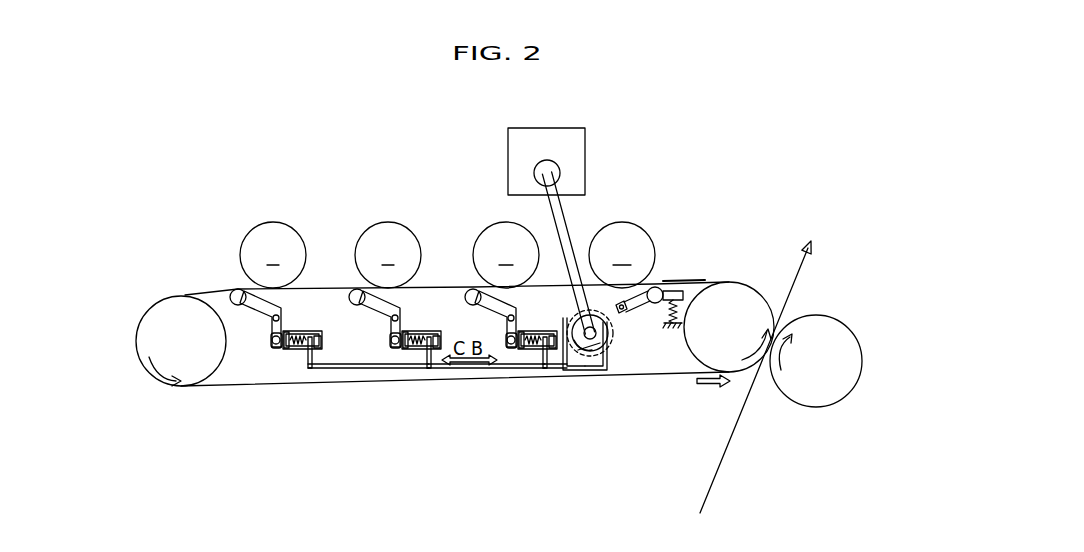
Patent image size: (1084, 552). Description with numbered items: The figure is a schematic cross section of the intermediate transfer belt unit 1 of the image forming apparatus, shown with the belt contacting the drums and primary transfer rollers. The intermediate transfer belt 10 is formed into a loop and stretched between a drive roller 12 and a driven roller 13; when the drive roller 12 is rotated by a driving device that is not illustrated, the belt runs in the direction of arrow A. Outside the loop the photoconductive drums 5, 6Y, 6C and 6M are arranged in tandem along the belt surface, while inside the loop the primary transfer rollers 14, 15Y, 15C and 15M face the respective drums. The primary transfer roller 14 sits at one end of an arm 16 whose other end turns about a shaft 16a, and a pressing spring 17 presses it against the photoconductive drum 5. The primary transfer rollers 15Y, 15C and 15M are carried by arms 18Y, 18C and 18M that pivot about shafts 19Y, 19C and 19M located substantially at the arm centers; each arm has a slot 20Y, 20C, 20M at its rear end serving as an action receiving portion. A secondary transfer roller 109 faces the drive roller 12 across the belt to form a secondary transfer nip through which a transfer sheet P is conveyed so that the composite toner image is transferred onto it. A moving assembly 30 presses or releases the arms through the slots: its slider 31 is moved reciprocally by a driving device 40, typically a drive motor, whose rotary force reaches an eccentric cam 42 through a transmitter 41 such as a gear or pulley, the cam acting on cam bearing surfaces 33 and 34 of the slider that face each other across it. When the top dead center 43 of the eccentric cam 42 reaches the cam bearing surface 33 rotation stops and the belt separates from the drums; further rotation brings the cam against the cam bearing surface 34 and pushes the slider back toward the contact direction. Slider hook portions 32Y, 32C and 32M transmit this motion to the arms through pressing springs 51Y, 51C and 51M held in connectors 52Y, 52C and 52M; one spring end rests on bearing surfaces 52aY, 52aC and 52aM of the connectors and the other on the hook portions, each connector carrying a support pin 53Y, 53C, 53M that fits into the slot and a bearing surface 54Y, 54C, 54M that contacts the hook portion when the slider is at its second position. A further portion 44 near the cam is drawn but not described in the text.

The intermediate transfer belt unit 1 is at (689, 143).
The photoconductive drum 5 is at (616, 223).
The photoconductive drum 6Y is at (260, 223).
The photoconductive drum 6C is at (375, 223).
The photoconductive drum 6M is at (493, 224).
The intermediate transfer belt 10 is at (230, 386).
The drive roller 12 is at (740, 287).
The driven roller 13 is at (165, 305).
The primary transfer roller 14 is at (656, 287).
The primary transfer roller 15Y is at (234, 290).
The primary transfer roller 15C is at (345, 277).
The primary transfer roller 15M is at (459, 276).
The arm 16 is at (640, 298).
The shaft 16a is at (627, 313).
The pressing spring 17 is at (688, 288).
The arm 18Y is at (287, 293).
The arm 18C is at (406, 307).
The arm 18M is at (521, 308).
The shaft 19Y is at (279, 315).
The shaft 19C is at (416, 304).
The shaft 19M is at (532, 304).
The slot 20Y is at (272, 348).
The slot 20C is at (372, 350).
The slot 20M is at (485, 335).
The moving assembly 30 is at (608, 355).
The slider 31 is at (600, 370).
The slider hook portion 32Y is at (317, 341).
The slider hook portion 32C is at (481, 392).
The slider hook portion 32M is at (550, 392).
The cam bearing surface 33 is at (612, 337).
The cam bearing surface 34 is at (588, 370).
The driving device 40 is at (508, 148).
The transmitter 41 is at (548, 216).
The eccentric cam 42 is at (612, 303).
The top dead center 43 is at (583, 368).
The frame right wall 44 is at (608, 368).
The pressing spring 51Y is at (303, 350).
The pressing spring 51C is at (413, 382).
The pressing spring 51M is at (529, 382).
The connector 52Y is at (300, 350).
The connector 52C is at (403, 371).
The connector 52M is at (517, 371).
The bearing surface 52aY is at (286, 333).
The bearing surface 52aC is at (426, 328).
The bearing surface 52aM is at (543, 326).
The support pin 53Y is at (271, 338).
The support pin 53C is at (371, 329).
The support pin 53M is at (484, 326).
The bearing surface 54Y is at (318, 350).
The bearing surface 54C is at (447, 372).
The bearing surface 54M is at (559, 372).
The secondary transfer roller 109 is at (818, 315).
The arrow A is at (713, 390).
The transfer sheet P is at (731, 437).